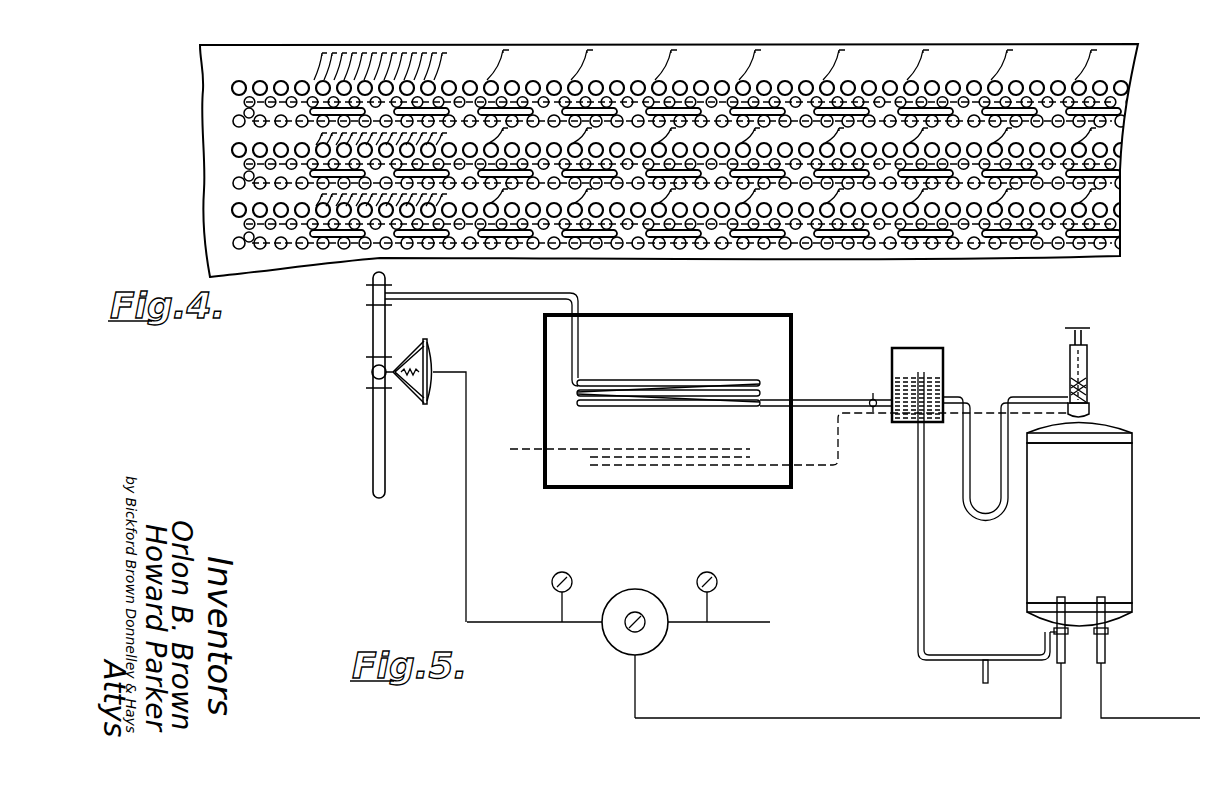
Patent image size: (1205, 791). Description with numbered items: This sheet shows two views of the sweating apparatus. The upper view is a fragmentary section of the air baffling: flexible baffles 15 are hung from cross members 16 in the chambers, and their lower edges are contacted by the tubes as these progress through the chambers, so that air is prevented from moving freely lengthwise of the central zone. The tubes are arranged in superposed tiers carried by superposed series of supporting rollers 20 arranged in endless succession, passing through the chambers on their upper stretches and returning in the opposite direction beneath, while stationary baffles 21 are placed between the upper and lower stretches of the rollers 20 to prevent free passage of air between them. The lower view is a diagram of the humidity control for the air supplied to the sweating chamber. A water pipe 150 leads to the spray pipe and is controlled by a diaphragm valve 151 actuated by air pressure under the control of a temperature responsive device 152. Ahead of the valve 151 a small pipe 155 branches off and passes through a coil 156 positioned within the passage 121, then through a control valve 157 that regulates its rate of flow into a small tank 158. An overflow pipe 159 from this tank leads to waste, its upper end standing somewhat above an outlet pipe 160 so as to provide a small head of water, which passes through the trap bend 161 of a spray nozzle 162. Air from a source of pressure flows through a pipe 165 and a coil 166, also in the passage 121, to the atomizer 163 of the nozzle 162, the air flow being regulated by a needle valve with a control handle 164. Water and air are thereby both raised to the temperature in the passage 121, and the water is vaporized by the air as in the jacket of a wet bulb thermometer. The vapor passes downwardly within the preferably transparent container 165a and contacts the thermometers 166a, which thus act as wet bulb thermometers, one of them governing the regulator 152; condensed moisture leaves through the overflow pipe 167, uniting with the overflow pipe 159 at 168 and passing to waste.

In FIG. 4, the flexible baffles 15 is at (322, 133).
In FIG. 4, the cross members 16 is at (590, 46).
In FIG. 4, the supporting rollers 20 is at (246, 110).
In FIG. 4, the stationary baffles 21 is at (592, 108).
In FIG. 5, the passage 121 is at (793, 322).
In FIG. 5, the water pipe 150 is at (371, 336).
In FIG. 5, the diaphragm valve 151 is at (372, 376).
In FIG. 5, the temperature responsive device 152 is at (620, 592).
In FIG. 5, the small pipe 155 is at (580, 298).
In FIG. 5, the coil 156 is at (650, 380).
In FIG. 5, the control valve 157 is at (873, 396).
In FIG. 5, the small tank 158 is at (944, 362).
In FIG. 5, the overflow pipe 159 is at (917, 451).
In FIG. 5, the outlet pipe 160 is at (958, 398).
In FIG. 5, the trap bend 161 is at (967, 478).
In FIG. 5, the spray nozzle 162 is at (1089, 388).
In FIG. 5, the atomizer 163 is at (1091, 406).
In FIG. 5, the control handle 164 is at (1086, 331).
In FIG. 5, the pipe 165 is at (521, 456).
In FIG. 5, the container 165a is at (1128, 490).
In FIG. 5, the coil 166 is at (650, 448).
In FIG. 5, the thermometers 166a is at (1100, 597).
In FIG. 5, the overflow pipe 167 is at (1048, 635).
In FIG. 5, the junction 168 is at (981, 681).